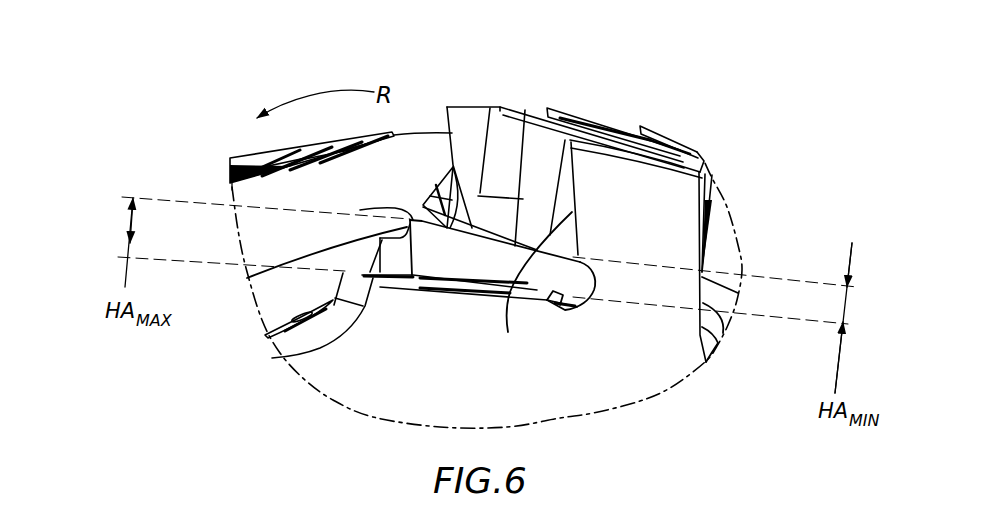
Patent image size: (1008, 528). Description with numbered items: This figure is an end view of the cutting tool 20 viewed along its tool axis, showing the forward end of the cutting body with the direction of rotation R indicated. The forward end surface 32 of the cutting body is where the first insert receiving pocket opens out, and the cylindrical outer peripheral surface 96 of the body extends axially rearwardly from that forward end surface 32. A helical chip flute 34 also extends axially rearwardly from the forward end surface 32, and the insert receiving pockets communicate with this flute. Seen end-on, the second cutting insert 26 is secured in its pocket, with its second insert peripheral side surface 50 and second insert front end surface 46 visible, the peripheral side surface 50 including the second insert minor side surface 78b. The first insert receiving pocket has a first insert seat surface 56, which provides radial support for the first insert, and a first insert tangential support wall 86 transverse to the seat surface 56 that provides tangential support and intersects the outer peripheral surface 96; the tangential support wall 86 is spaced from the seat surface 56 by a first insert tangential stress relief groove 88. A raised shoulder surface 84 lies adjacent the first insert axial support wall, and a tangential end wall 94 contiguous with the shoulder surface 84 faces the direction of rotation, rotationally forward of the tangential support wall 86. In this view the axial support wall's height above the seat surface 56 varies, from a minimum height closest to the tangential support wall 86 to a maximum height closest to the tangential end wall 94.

The cutting tool 20 is at (205, 213).
The second cutting insert 26 is at (480, 106).
The cylindrical outer peripheral surface 96 is at (413, 125).
The second insert peripheral side surface 50 is at (508, 138).
The second insert minor side surface 78b is at (522, 196).
The second insert front end surface 46 is at (447, 178).
The forward end surface 32 is at (590, 382).
The raised shoulder surface 84 is at (400, 208).
The tangential end wall 94 is at (397, 258).
The first insert tangential support wall 86 is at (517, 270).
The first insert tangential stress relief groove 88 is at (557, 303).
The first insert seat surface 56 is at (387, 282).
The helical chip flute 34 is at (292, 302).